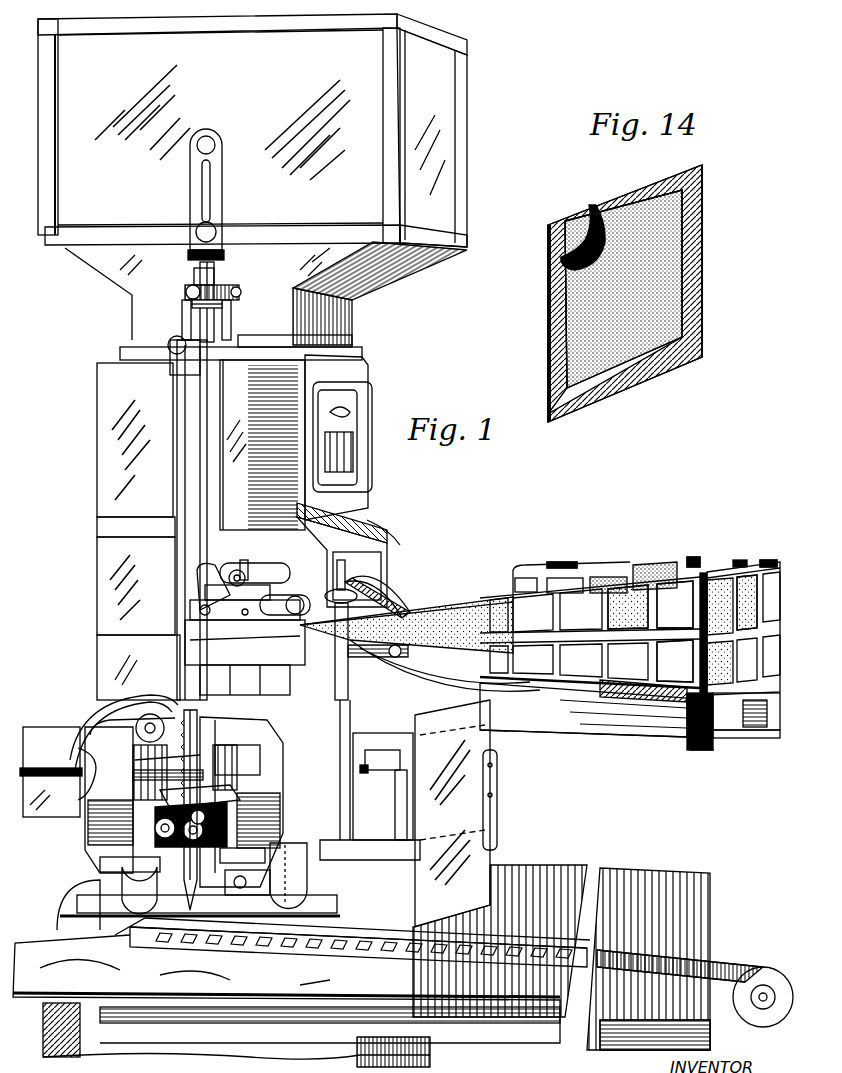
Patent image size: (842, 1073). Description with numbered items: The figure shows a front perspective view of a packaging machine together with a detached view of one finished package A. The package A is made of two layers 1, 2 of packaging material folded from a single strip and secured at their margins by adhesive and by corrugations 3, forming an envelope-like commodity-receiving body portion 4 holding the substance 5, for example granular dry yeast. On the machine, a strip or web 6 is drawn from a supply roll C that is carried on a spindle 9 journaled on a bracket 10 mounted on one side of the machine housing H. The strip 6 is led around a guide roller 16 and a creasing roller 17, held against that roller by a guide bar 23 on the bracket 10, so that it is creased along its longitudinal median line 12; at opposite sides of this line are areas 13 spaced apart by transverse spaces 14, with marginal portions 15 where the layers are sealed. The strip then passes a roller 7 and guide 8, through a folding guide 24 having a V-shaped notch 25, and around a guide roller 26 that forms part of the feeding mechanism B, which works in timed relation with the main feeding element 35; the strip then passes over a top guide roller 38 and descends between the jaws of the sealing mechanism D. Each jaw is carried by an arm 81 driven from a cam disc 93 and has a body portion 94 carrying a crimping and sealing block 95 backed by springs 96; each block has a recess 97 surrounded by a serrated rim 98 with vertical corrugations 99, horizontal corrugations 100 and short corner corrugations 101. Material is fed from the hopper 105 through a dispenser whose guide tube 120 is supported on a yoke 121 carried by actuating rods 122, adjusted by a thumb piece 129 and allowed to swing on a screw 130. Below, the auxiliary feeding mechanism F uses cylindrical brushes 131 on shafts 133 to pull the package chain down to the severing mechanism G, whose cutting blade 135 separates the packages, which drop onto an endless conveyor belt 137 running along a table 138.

In FIG. 1, the layer 1 is at (460, 615).
In FIG. 14, the layer 1 is at (550, 225).
In FIG. 1, the layer 2 is at (440, 645).
In FIG. 14, the layer 2 is at (578, 275).
In FIG. 14, the interdigitations or corrugations 3 is at (702, 297).
In FIG. 14, the commodity-receiving body portion 4 is at (590, 232).
In FIG. 14, the substance 5 is at (567, 255).
In FIG. 1, the package A is at (372, 958).
In FIG. 14, the package A is at (703, 165).
In FIG. 1, the feeding mechanism B is at (275, 600).
In FIG. 1, the supply roll C is at (603, 560).
In FIG. 1, the sealing mechanism D is at (114, 700).
In FIG. 1, the auxiliary feeding mechanism F is at (161, 820).
In FIG. 1, the severing mechanism G is at (198, 905).
In FIG. 1, the machine housing H is at (385, 538).
In FIG. 1, the strip or web 6 is at (670, 585).
In FIG. 1, the roller 7 is at (715, 568).
In FIG. 1, the guide 8 is at (390, 595).
In FIG. 1, the spindle 9 is at (560, 565).
In FIG. 1, the bracket 10 is at (530, 715).
In FIG. 1, the longitudinal median line 12 is at (672, 638).
In FIG. 1, the areas 13 is at (595, 665).
In FIG. 1, the spaces 14 is at (652, 598).
In FIG. 1, the margin portions 15 is at (699, 585).
In FIG. 1, the guide roller 16 is at (778, 565).
In FIG. 1, the creasing roller 17 is at (760, 580).
In FIG. 1, the guide bar 23 is at (700, 690).
In FIG. 1, the folding guide 24 is at (385, 658).
In FIG. 1, the V-shaped notch 25 is at (345, 607).
In FIG. 1, the guide roller 26 is at (280, 612).
In FIG. 1, the main feeding element 35 is at (270, 560).
In FIG. 1, the top guide roller 38 is at (200, 335).
In FIG. 1, the arm 81 is at (288, 873).
In FIG. 1, the disc 93 is at (262, 875).
In FIG. 1, the body portion 94 is at (78, 750).
In FIG. 1, the crimping and sealing block 95 is at (135, 750).
In FIG. 1, the springs 96 is at (218, 761).
In FIG. 1, the recess 97 is at (172, 712).
In FIG. 1, the rim 98 is at (178, 710).
In FIG. 1, the vertical series of corrugations 99 is at (135, 764).
In FIG. 1, the horizontal series of corrugations 100 is at (135, 779).
In FIG. 1, the short series of corrugations 101 is at (225, 790).
In FIG. 1, the hopper 105 is at (252, 179).
In FIG. 1, the guide tube 120 is at (212, 324).
In FIG. 1, the yoke 121 is at (240, 288).
In FIG. 1, the actuating rods 122 is at (184, 312).
In FIG. 1, the thumb piece 129 is at (226, 257).
In FIG. 1, the screw 130 is at (192, 292).
In FIG. 1, the cylindrical brushes 131 is at (150, 822).
In FIG. 1, the shafts 133 is at (152, 842).
In FIG. 1, the cutting blade 135 is at (200, 875).
In FIG. 1, the endless conveyor belt 137 is at (732, 960).
In FIG. 1, the table 138 is at (705, 882).